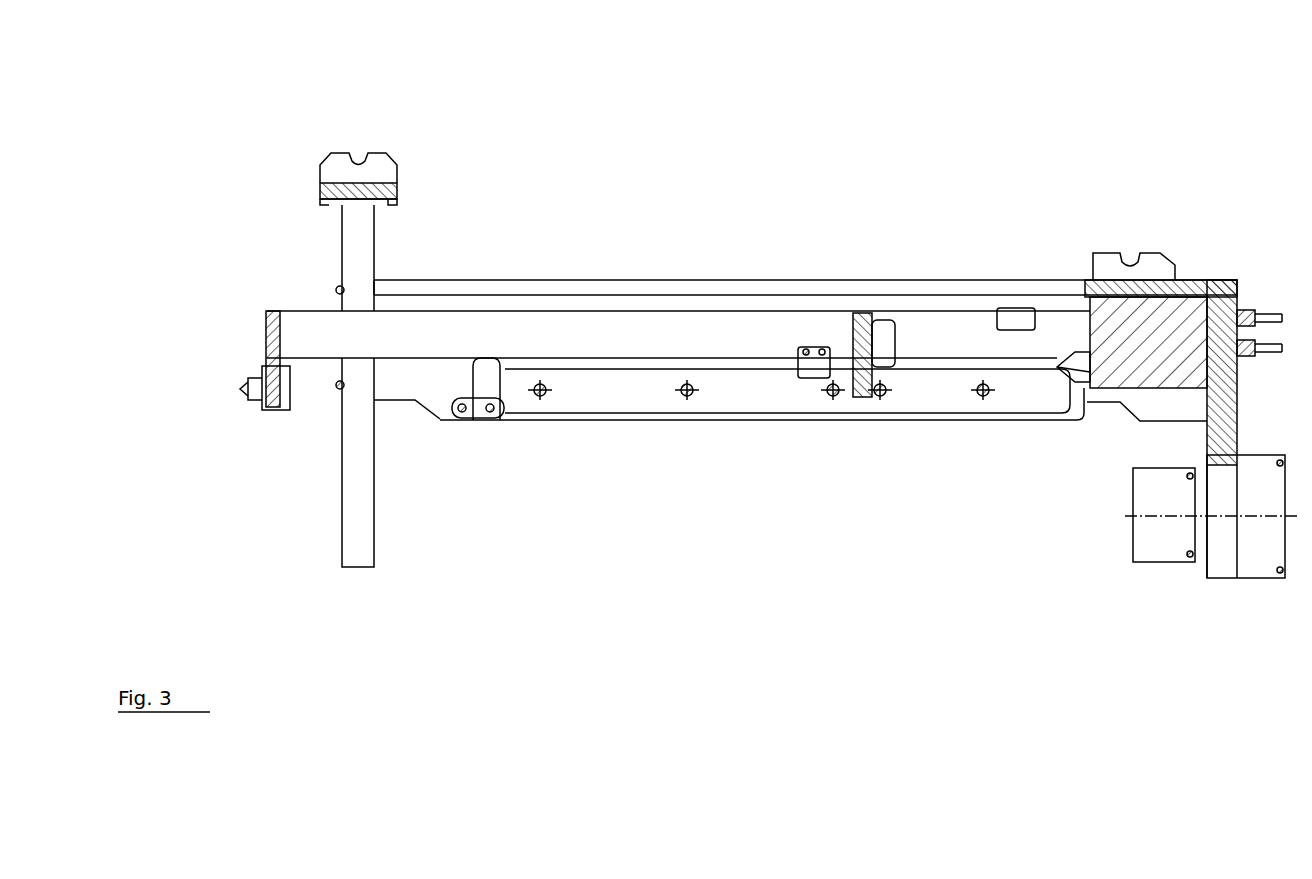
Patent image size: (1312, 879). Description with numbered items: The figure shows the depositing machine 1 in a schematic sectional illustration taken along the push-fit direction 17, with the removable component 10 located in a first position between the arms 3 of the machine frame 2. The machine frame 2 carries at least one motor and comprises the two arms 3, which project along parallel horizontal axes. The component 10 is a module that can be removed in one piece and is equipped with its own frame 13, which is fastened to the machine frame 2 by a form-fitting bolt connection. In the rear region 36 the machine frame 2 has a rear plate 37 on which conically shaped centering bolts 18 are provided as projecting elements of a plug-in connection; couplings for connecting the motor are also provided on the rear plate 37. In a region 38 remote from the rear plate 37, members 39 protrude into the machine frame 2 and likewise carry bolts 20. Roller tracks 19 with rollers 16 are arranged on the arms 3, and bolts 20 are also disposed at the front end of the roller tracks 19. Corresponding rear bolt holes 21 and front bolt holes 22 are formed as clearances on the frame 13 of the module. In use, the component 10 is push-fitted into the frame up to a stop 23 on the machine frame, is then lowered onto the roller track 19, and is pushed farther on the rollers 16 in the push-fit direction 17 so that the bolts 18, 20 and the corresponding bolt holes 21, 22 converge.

The depositing machine 1 is at (1130, 142).
The machine frame 2 is at (1188, 306).
The arms 3 is at (961, 330).
The component 10 is at (587, 345).
The frame 13 is at (690, 330).
The rollers 16 is at (690, 400).
The push-fit direction 17 is at (793, 578).
The bolts 18 is at (1085, 375).
The roller track 19 is at (962, 420).
The bolts 20 is at (465, 418).
The rear bolt holes 21 is at (883, 300).
The front bolt holes 22 is at (273, 412).
The stop 23 is at (1010, 305).
The rear region 36 is at (1092, 470).
The rear plate 37 is at (1240, 280).
The region 38 is at (476, 455).
The members 39 is at (500, 413).